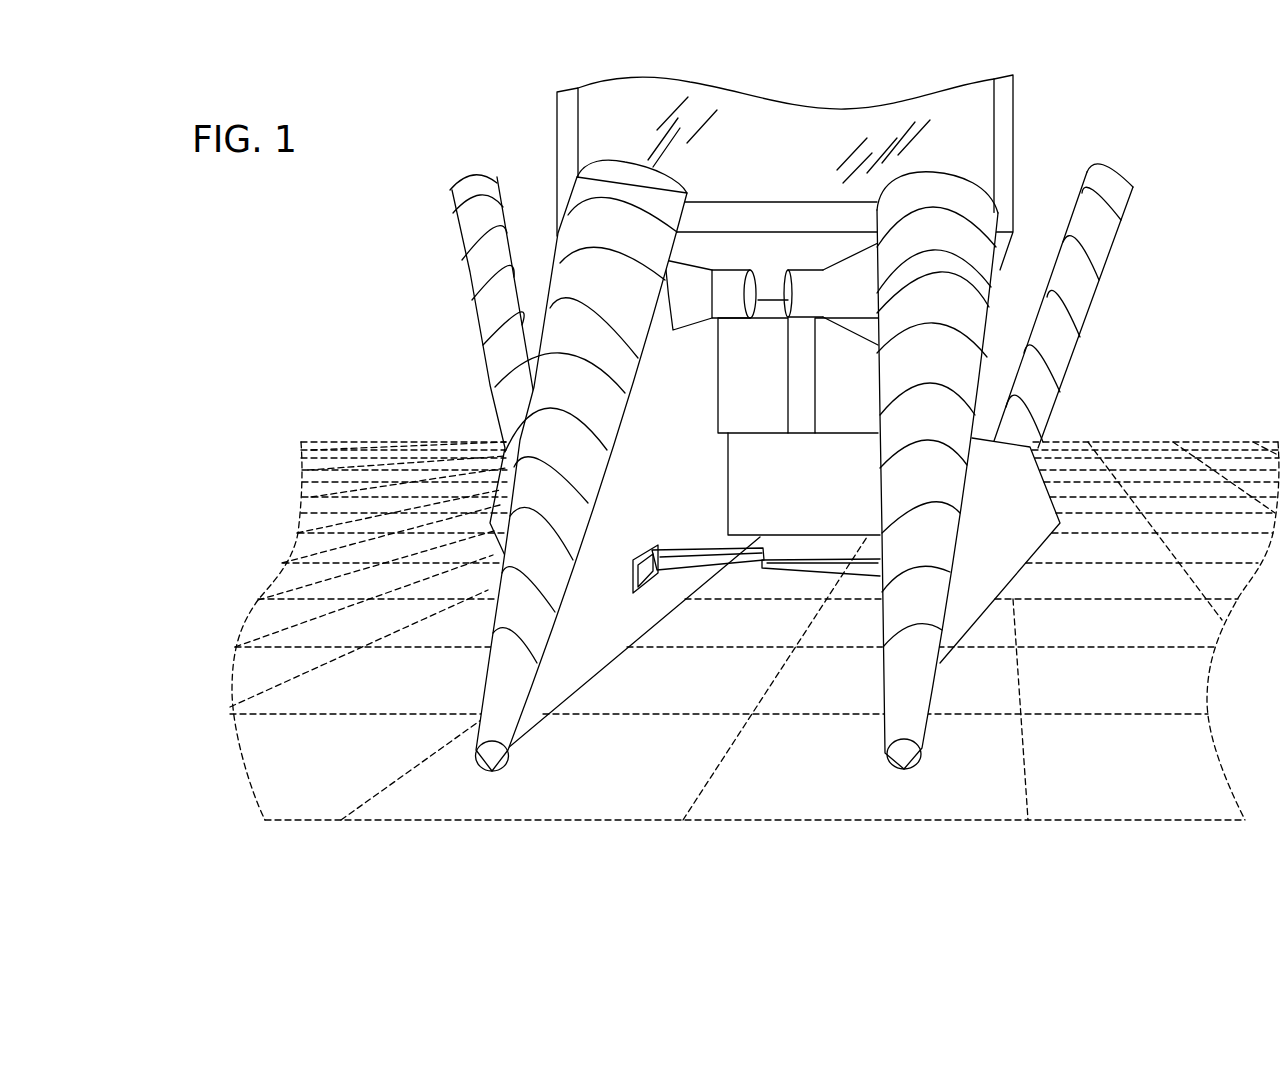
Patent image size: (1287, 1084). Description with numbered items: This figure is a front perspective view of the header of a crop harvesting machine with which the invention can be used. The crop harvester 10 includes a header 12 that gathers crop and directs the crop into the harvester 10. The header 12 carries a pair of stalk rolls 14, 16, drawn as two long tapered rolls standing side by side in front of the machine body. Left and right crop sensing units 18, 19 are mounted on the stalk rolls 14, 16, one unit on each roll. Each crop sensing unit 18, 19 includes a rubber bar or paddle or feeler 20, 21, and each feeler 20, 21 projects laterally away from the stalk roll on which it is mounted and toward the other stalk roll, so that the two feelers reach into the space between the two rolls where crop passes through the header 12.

The crop harvester 10 is at (1046, 77).
The header 12 is at (473, 689).
The stalk roll 14 is at (945, 429).
The stalk roll 16 is at (540, 445).
The left crop sensing unit 18 is at (885, 676).
The right crop sensing unit 19 is at (590, 656).
The feeler 20 is at (823, 568).
The feeler 21 is at (680, 562).